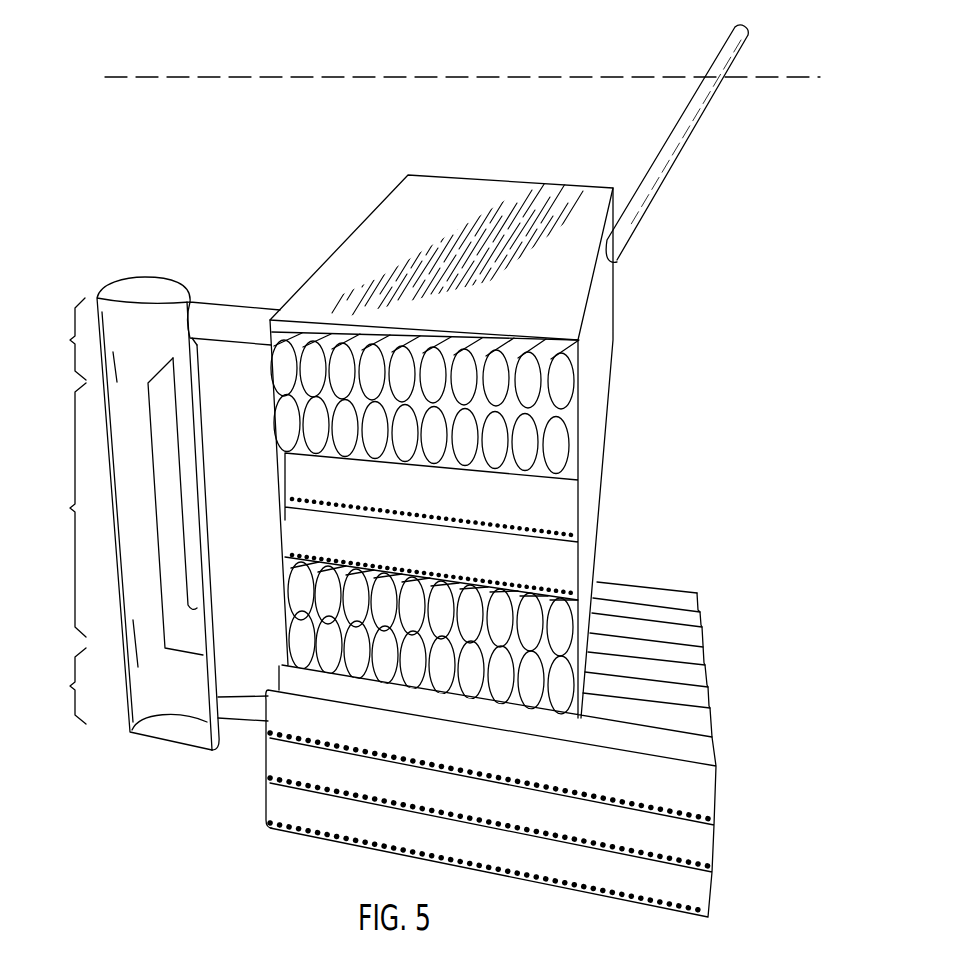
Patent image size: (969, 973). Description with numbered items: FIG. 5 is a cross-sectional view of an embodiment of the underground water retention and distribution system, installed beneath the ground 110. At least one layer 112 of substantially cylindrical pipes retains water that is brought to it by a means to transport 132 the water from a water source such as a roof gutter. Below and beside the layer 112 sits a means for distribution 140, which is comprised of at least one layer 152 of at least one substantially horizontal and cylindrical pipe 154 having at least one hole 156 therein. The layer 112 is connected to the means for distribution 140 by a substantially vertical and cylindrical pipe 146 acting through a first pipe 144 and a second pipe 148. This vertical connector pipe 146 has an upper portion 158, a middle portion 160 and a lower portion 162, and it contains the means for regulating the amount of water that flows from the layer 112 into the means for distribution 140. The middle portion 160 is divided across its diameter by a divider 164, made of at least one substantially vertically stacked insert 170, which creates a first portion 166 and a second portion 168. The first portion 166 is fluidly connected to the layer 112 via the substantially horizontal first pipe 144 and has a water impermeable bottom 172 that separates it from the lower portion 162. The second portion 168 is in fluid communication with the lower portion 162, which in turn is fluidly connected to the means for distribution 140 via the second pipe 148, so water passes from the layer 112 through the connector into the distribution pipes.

The ground 110 is at (236, 72).
The means to transport 132 is at (678, 141).
The layer 112 is at (562, 508).
The first pipe 144 is at (235, 306).
The second pipe 148 is at (238, 723).
The substantially vertical and cylindrical pipe 146 is at (177, 513).
The upper portion 158 is at (62, 339).
The middle portion 160 is at (62, 510).
The lower portion 162 is at (62, 686).
The divider 164 is at (192, 560).
The first portion 166 is at (185, 441).
The second portion 168 is at (135, 468).
The substantially vertically stacked insert 170 is at (178, 412).
The water impermeable bottom 172 is at (212, 630).
The means for distribution 140 is at (541, 765).
The layer 152 is at (703, 840).
The substantially horizontal and cylindrical pipe 154 is at (699, 897).
The hole 156 is at (531, 880).